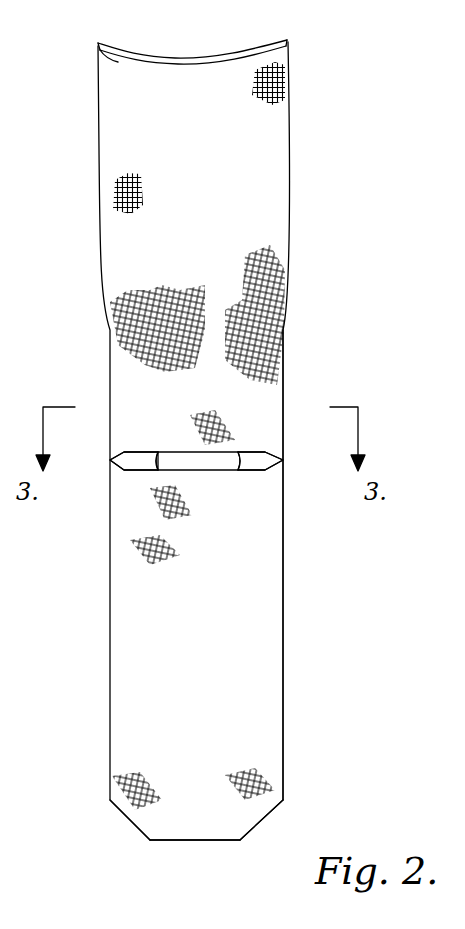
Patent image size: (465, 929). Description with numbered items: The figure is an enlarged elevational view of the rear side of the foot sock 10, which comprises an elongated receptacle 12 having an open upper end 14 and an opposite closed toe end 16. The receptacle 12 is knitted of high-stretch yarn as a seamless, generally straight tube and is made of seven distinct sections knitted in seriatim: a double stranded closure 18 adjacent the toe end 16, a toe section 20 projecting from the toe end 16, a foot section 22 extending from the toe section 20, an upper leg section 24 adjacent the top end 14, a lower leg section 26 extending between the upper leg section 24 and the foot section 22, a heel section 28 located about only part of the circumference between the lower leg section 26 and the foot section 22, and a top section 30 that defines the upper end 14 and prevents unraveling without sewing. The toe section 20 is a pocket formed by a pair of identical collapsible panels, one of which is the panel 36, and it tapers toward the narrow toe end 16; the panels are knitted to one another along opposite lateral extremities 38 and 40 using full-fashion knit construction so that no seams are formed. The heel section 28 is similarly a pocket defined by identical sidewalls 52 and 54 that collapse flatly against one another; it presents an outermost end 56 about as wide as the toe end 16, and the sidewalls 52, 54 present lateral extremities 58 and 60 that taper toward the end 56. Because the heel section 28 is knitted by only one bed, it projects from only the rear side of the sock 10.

The foot sock 10 is at (292, 139).
The receptacle 12 is at (378, 0).
The open upper end 14 is at (104, 42).
The closed toe end 16 is at (198, 840).
The double stranded closure 18 is at (148, 828).
The toe section 20 is at (276, 4).
The foot section 22 is at (272, 629).
The upper leg section 24 is at (107, 180).
The lower leg section 26 is at (125, 352).
The heel section 28 is at (195, 470).
The top section 30 is at (112, 58).
The panel 36 is at (228, 828).
The lateral extremity 38 is at (118, 812).
The lateral extremity 40 is at (265, 822).
The sidewall 52 is at (183, 452).
The sidewall 54 is at (237, 470).
The outermost end 56 is at (160, 470).
The lateral extremity 58 is at (130, 461).
The lateral extremity 60 is at (268, 462).